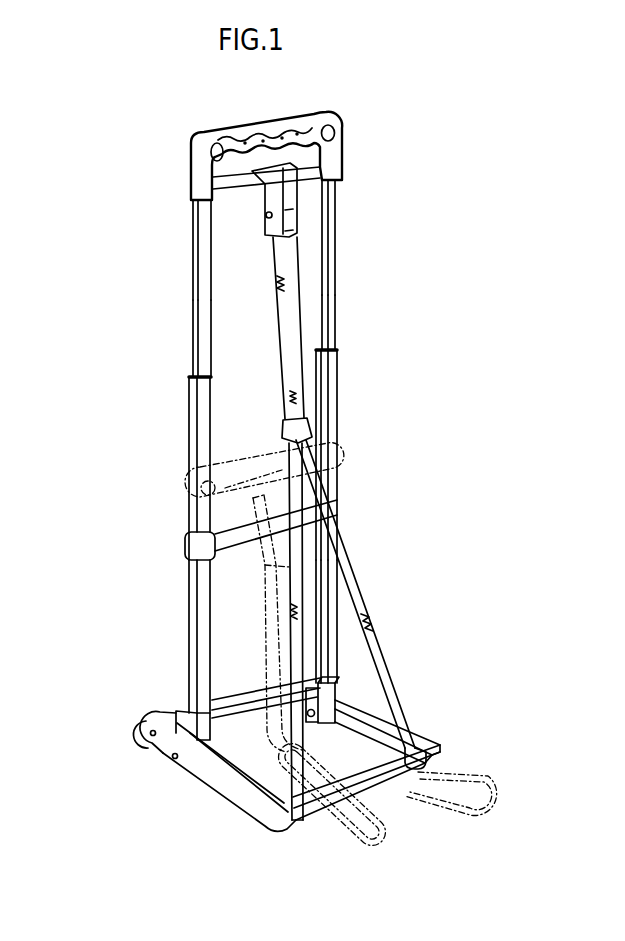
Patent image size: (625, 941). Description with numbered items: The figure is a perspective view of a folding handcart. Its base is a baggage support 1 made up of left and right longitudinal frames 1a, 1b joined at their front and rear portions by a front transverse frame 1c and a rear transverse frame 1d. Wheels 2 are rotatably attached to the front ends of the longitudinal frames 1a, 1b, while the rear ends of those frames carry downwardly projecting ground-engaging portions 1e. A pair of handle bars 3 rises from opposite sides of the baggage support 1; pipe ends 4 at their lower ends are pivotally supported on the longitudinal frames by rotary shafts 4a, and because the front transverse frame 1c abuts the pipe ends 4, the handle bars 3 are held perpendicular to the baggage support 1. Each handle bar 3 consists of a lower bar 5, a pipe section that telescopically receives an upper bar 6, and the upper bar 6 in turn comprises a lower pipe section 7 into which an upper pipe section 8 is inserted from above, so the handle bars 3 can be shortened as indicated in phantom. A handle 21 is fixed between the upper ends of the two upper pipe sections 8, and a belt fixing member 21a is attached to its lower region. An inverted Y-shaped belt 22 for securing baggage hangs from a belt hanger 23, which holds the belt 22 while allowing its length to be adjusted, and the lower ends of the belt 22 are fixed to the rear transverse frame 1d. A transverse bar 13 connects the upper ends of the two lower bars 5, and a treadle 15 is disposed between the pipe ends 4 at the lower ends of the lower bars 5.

The baggage support 1 is at (207, 798).
The left longitudinal frame 1a is at (243, 808).
The right longitudinal frame 1b is at (430, 740).
The front transverse frame 1c is at (227, 693).
The rear transverse frame 1d is at (397, 827).
The ground-engaging portions 1e is at (445, 762).
The wheels 2 is at (140, 737).
The handle bars 3 is at (173, 482).
The pipe ends 4 is at (340, 695).
The rotary shafts 4a is at (173, 758).
The lower bar 5 is at (187, 617).
The upper bar 6 is at (191, 344).
The lower pipe section 7 is at (192, 418).
The upper pipe section 8 is at (200, 298).
The transverse bar 13 is at (236, 540).
The treadle 15 is at (234, 722).
The handle 21 is at (283, 142).
The belt fixing member 21a is at (333, 163).
The belt 22 is at (297, 262).
The belt hanger 23 is at (286, 197).